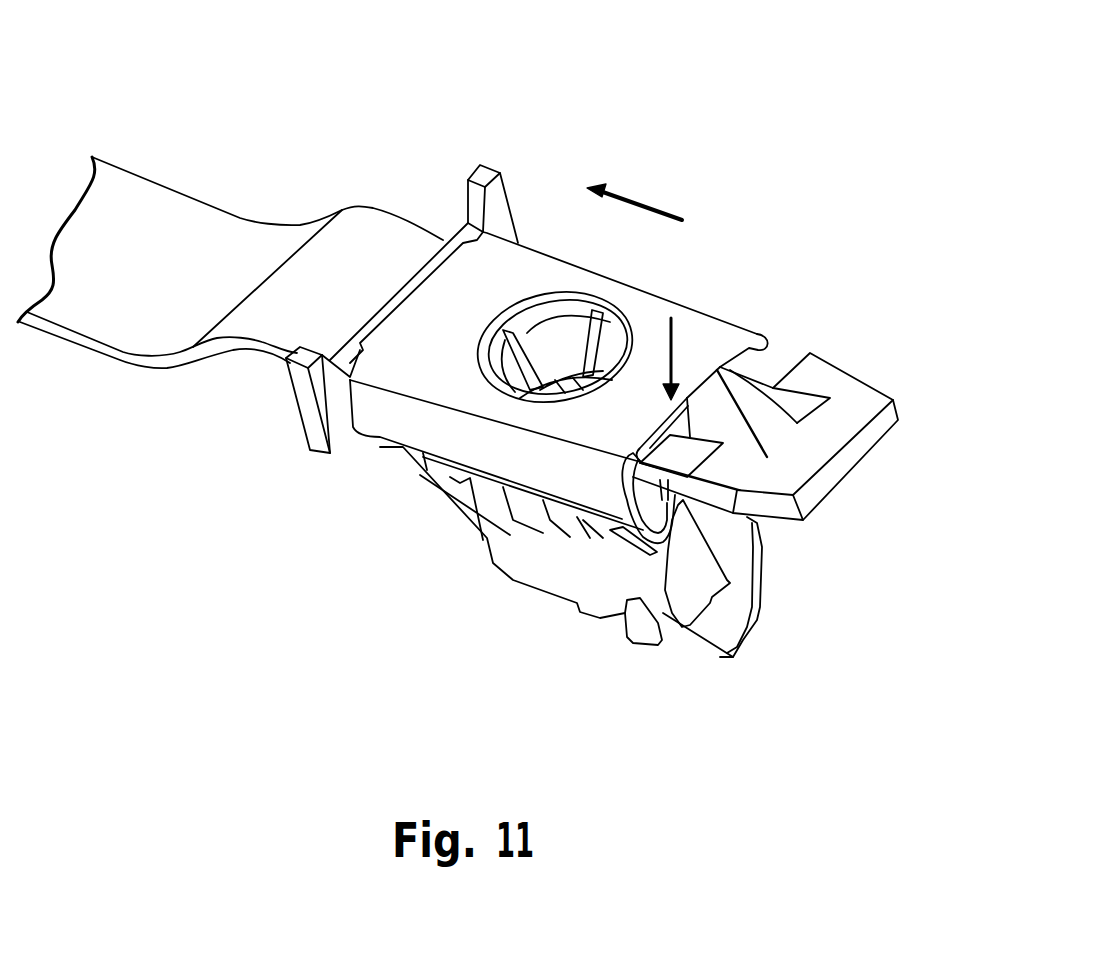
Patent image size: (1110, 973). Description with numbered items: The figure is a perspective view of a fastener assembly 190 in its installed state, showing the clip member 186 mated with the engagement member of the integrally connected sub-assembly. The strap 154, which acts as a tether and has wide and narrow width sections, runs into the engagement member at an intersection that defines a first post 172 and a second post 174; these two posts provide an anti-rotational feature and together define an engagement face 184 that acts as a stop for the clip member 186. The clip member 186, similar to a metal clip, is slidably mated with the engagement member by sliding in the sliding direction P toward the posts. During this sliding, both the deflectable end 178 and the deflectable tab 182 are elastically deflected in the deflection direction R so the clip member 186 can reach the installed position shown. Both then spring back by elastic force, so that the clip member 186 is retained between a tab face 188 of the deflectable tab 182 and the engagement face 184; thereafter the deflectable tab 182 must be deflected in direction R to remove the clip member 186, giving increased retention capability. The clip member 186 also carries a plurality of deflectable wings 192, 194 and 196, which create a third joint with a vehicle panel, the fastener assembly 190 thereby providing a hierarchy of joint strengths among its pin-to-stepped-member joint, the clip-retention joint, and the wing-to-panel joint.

The strap 154 is at (165, 230).
The first post 172 is at (488, 180).
The second post 174 is at (298, 377).
The deflectable end 178 is at (845, 387).
The deflectable tab 182 is at (742, 407).
The engagement face 184 is at (510, 227).
The clip member 186 is at (693, 330).
The tab face 188 is at (703, 372).
The fastener assembly 190 is at (708, 101).
The deflectable wing 192 is at (652, 508).
The deflectable wing 194 is at (683, 580).
The deflectable wing 196 is at (462, 497).